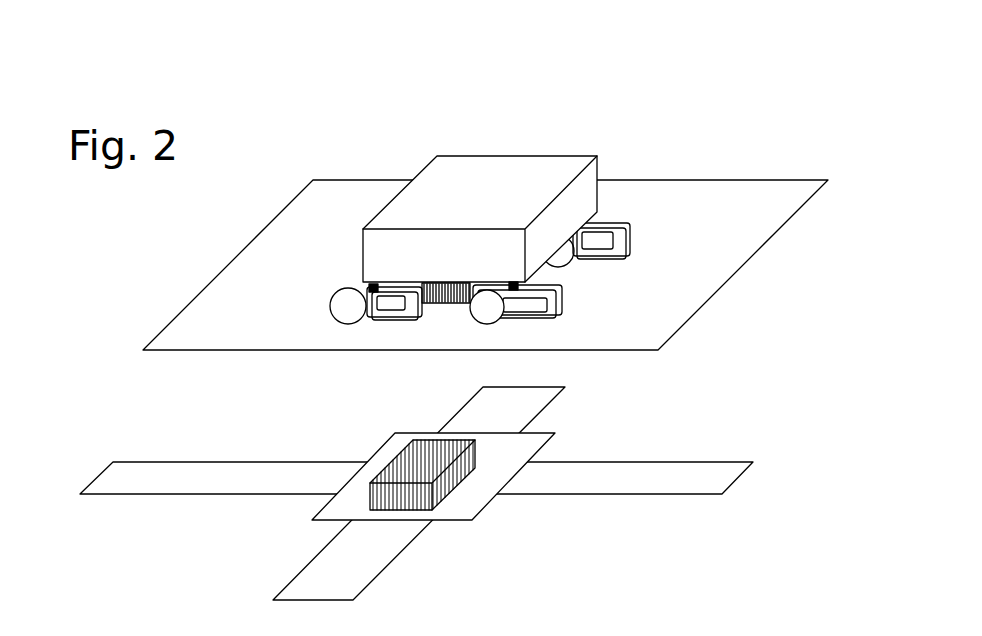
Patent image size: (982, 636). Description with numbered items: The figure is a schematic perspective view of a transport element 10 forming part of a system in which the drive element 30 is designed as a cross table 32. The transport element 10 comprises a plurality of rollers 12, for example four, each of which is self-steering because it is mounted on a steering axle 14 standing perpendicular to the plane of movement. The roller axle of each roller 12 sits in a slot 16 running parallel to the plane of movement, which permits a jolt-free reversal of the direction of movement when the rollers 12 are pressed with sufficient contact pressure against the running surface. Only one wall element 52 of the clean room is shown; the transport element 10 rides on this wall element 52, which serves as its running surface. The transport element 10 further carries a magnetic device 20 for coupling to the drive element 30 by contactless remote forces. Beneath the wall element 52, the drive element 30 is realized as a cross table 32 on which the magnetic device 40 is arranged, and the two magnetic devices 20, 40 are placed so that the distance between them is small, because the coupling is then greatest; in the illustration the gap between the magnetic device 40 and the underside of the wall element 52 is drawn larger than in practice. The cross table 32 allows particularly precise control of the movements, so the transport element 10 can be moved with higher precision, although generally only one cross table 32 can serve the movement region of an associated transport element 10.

The transport element 10 is at (458, 195).
The rollers 12 is at (347, 305).
The steering axle 14 is at (375, 288).
The slot 16 is at (598, 245).
The magnetic device 20 is at (462, 297).
The drive element 30 is at (598, 428).
The cross table 32 is at (375, 552).
The magnetic device 40 is at (393, 498).
The wall element 52 is at (217, 339).